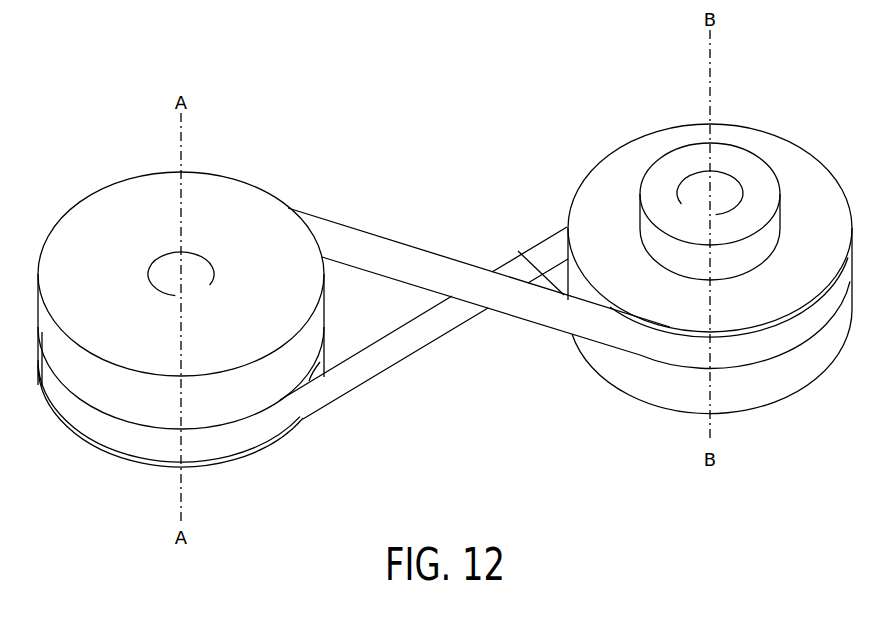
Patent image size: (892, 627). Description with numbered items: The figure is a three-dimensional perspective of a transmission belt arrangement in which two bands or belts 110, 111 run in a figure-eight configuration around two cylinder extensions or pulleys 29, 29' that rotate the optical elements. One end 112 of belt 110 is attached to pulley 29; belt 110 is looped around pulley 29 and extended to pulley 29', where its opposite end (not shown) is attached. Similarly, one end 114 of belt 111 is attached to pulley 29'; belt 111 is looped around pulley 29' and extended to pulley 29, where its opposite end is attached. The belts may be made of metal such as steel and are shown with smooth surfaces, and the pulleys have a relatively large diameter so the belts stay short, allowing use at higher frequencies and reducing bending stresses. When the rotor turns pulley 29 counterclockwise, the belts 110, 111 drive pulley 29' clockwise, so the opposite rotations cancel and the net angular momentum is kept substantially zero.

The pulley 29 is at (710, 283).
The pulley 29' is at (181, 299).
The belt 110 is at (555, 313).
The belt 111 is at (335, 385).
The end of belt 110 112 is at (518, 251).
The end of belt 111 114 is at (330, 363).